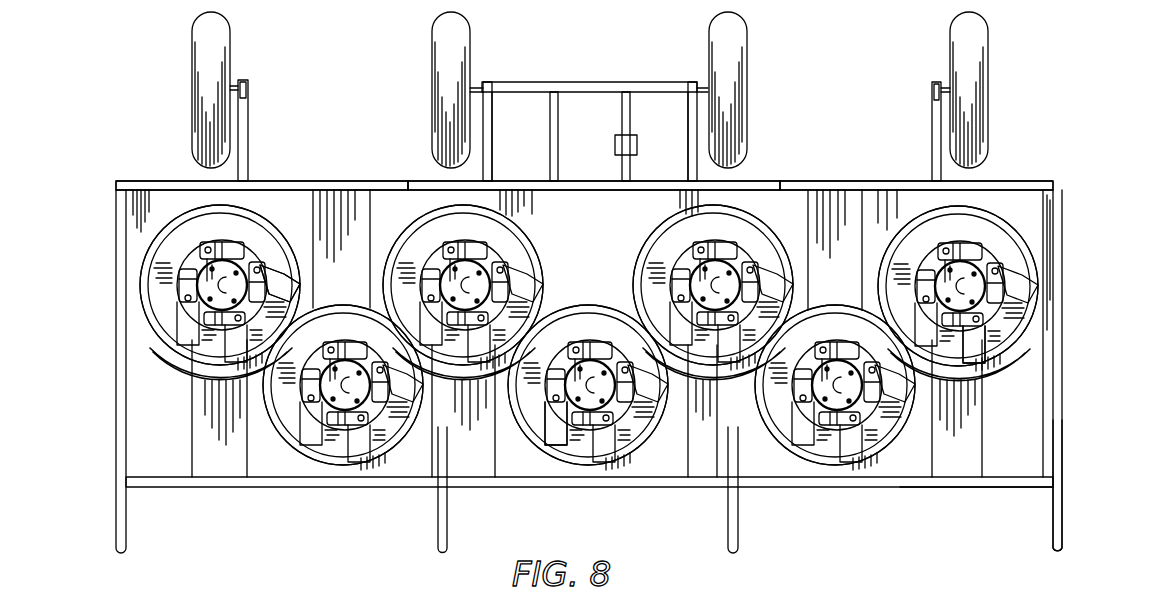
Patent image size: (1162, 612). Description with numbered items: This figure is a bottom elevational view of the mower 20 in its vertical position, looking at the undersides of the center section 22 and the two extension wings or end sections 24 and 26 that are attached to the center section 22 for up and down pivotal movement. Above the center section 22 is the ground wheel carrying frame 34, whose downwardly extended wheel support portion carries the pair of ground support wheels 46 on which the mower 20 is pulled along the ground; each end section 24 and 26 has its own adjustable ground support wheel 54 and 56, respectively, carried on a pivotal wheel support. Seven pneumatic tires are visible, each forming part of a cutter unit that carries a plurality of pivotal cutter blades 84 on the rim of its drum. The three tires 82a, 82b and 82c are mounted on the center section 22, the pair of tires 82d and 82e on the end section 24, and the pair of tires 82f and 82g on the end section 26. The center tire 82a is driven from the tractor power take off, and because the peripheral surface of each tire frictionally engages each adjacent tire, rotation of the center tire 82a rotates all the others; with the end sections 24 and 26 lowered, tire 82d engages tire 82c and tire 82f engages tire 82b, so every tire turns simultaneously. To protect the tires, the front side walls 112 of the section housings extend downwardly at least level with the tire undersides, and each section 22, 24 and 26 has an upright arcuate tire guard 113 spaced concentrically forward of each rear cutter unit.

The mower 20 is at (1003, 170).
The center section 22 is at (752, 172).
The end section 24 is at (975, 497).
The end section 26 is at (131, 170).
The ground wheel carrying frame 34 is at (572, 72).
The ground support wheels 46 is at (447, 32).
The adjustable ground support wheel 54 is at (960, 26).
The adjustable ground support wheel 56 is at (218, 30).
The center tire 82a is at (636, 438).
The pneumatic tire 82b is at (397, 243).
The pneumatic tire 82c is at (758, 230).
The pneumatic tire 82d is at (876, 430).
The pneumatic tire 82e is at (1000, 250).
The pneumatic tire 82f is at (318, 462).
The pneumatic tire 82g is at (150, 290).
The pivotal cutter blades 84 is at (278, 262).
The front side walls 112 is at (226, 488).
The upright arcuate tire guard 113 is at (1027, 352).